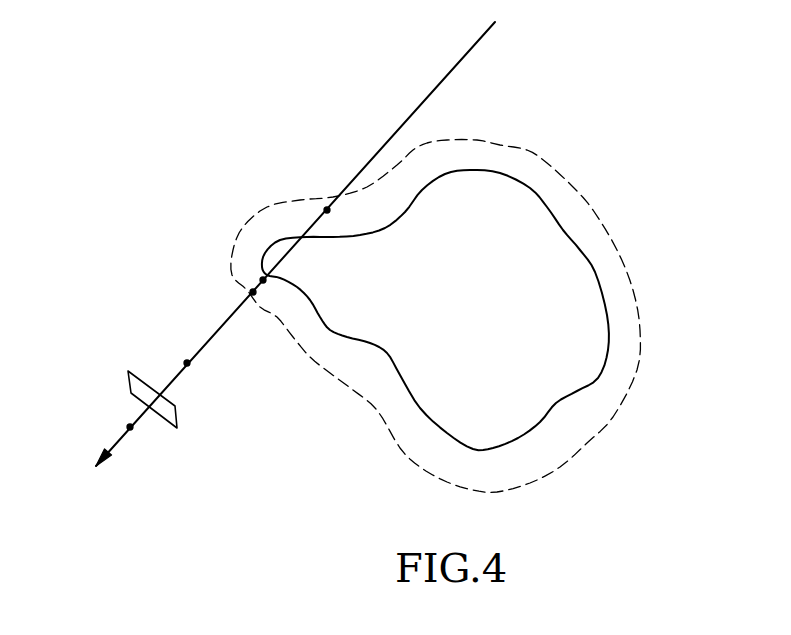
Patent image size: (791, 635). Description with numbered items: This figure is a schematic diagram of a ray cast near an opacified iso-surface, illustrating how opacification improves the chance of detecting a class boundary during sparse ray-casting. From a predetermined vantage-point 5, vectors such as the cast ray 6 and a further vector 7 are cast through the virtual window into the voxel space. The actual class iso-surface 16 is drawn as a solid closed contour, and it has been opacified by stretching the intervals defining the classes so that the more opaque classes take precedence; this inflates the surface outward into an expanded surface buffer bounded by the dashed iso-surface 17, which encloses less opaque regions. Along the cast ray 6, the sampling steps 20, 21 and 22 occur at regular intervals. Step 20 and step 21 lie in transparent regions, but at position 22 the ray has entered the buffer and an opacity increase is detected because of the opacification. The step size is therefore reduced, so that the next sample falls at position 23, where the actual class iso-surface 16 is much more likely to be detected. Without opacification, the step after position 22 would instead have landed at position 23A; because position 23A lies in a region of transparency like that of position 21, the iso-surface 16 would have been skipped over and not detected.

The vantage-point 5 is at (104, 453).
The cast ray 6 is at (400, 128).
The cast ray vector 7 is at (177, 418).
The class iso-surface 16 is at (514, 179).
The opacified iso-surface 17 is at (597, 212).
The ray step 20 is at (130, 427).
The ray step 21 is at (187, 363).
The ray step position 22 is at (253, 292).
The reduced step position 23 is at (263, 279).
The unreduced step position 23A is at (327, 210).